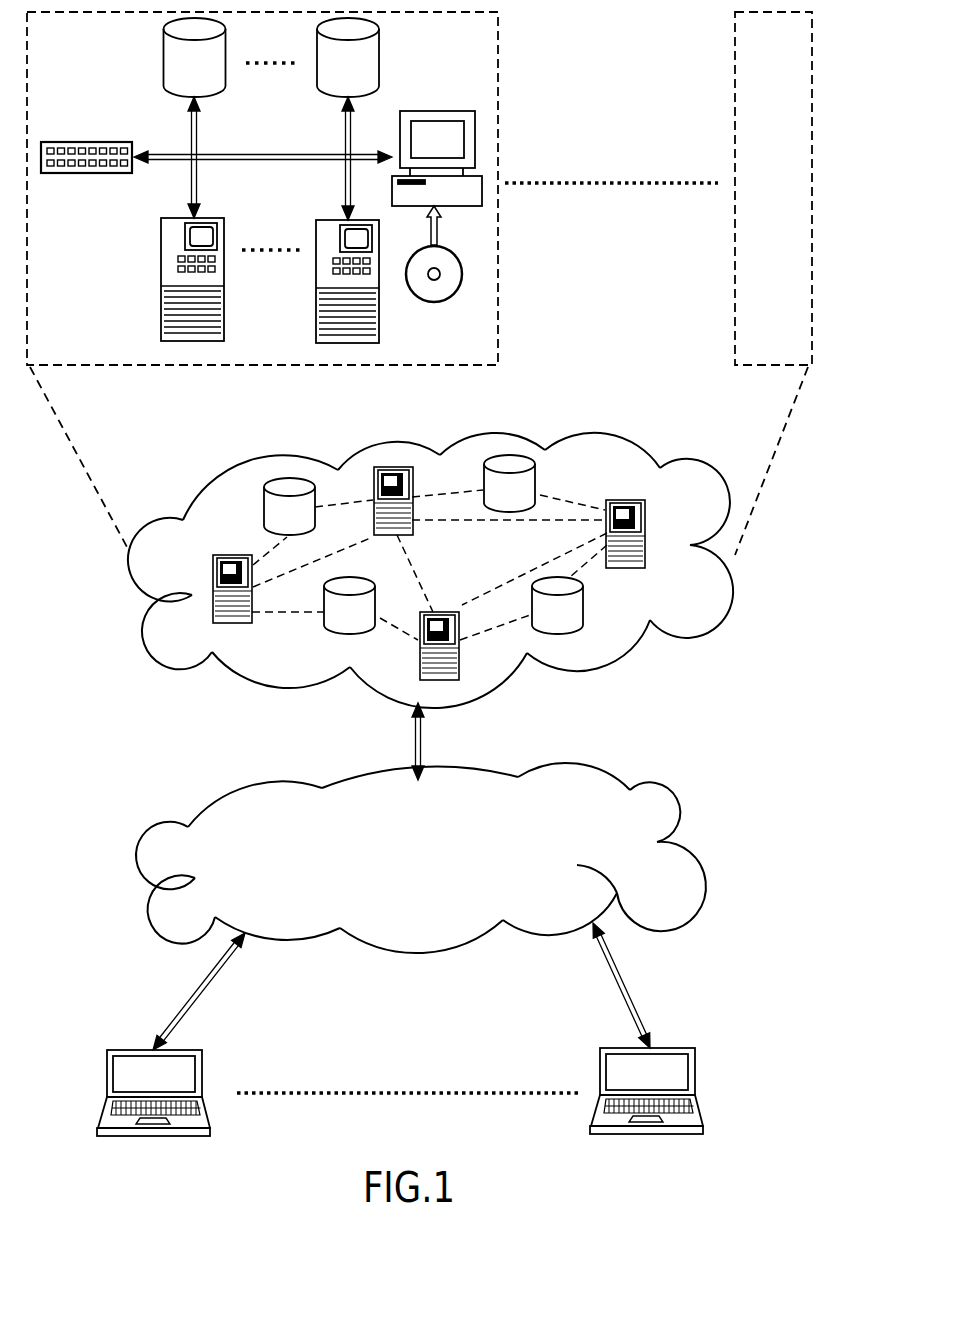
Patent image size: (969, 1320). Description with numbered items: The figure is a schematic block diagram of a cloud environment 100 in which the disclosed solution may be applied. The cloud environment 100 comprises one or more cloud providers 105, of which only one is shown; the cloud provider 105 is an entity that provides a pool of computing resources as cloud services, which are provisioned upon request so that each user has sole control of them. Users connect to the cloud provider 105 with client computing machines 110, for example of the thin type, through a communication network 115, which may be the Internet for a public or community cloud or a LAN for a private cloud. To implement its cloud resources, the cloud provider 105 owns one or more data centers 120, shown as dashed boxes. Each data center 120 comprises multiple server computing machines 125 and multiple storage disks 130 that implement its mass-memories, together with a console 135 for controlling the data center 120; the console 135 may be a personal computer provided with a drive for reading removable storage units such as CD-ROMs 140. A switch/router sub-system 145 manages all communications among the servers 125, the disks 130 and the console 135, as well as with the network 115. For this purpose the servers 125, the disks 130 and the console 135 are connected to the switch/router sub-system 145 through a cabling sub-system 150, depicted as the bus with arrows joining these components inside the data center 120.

The cloud environment 100 is at (118, 683).
The cloud provider 105 is at (258, 683).
The client computing machine 110 is at (160, 1136).
The network 115 is at (200, 805).
The data center 120 is at (270, 366).
The server computing machine 125 is at (160, 308).
The storage disk 130 is at (160, 77).
The console 135 is at (413, 110).
The CD-ROM 140 is at (418, 297).
The switch/router sub-system 145 is at (63, 174).
The cabling sub-system 150 is at (254, 161).